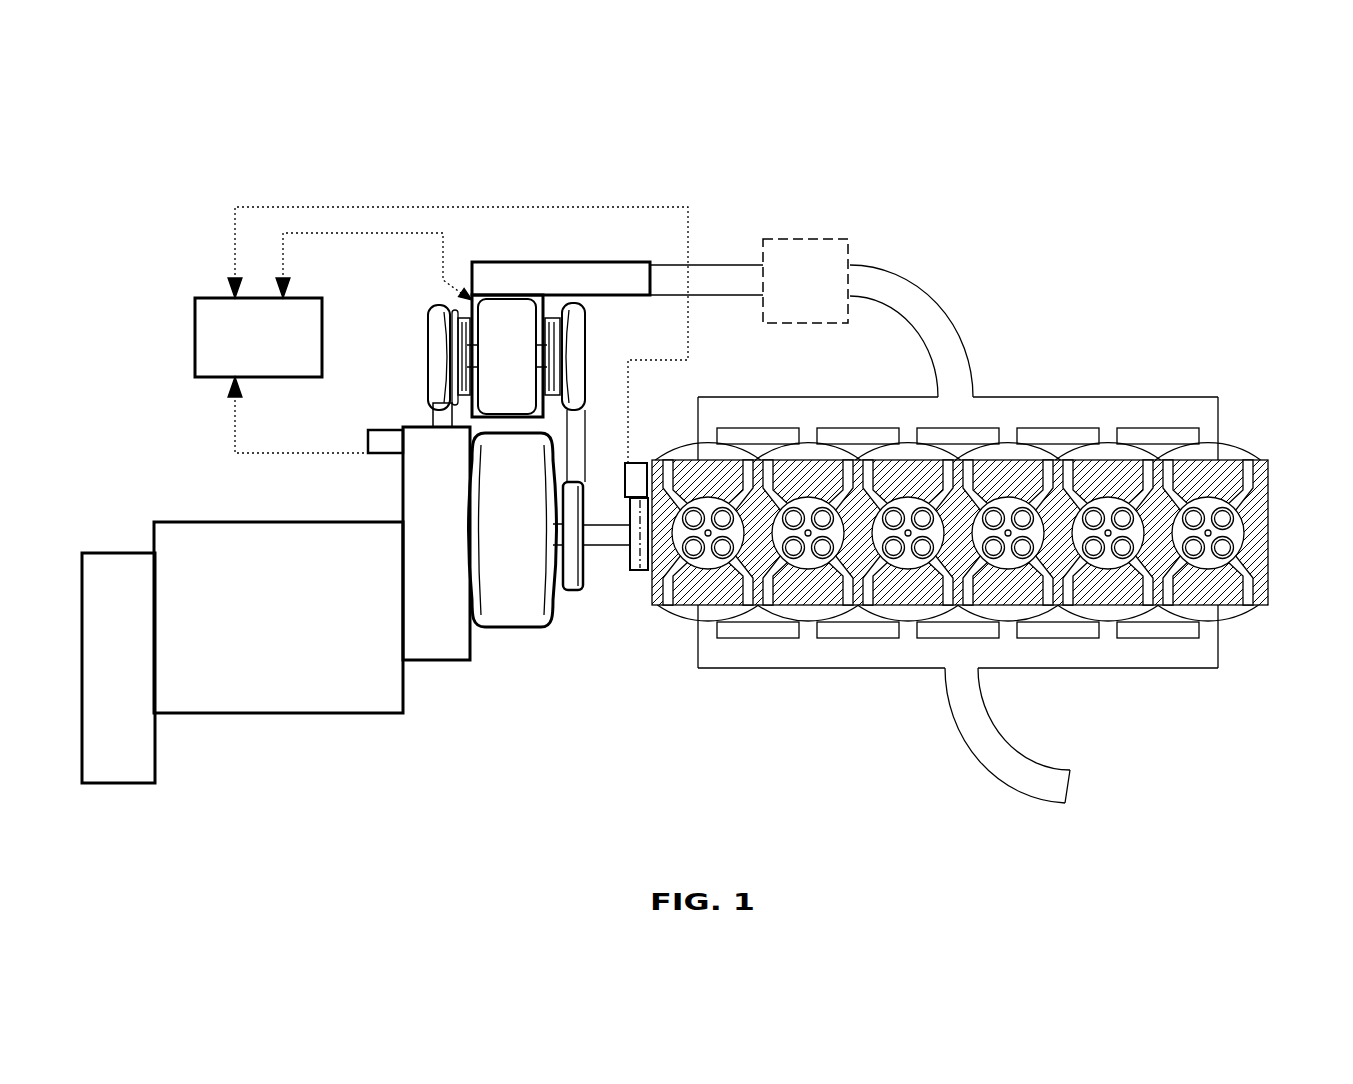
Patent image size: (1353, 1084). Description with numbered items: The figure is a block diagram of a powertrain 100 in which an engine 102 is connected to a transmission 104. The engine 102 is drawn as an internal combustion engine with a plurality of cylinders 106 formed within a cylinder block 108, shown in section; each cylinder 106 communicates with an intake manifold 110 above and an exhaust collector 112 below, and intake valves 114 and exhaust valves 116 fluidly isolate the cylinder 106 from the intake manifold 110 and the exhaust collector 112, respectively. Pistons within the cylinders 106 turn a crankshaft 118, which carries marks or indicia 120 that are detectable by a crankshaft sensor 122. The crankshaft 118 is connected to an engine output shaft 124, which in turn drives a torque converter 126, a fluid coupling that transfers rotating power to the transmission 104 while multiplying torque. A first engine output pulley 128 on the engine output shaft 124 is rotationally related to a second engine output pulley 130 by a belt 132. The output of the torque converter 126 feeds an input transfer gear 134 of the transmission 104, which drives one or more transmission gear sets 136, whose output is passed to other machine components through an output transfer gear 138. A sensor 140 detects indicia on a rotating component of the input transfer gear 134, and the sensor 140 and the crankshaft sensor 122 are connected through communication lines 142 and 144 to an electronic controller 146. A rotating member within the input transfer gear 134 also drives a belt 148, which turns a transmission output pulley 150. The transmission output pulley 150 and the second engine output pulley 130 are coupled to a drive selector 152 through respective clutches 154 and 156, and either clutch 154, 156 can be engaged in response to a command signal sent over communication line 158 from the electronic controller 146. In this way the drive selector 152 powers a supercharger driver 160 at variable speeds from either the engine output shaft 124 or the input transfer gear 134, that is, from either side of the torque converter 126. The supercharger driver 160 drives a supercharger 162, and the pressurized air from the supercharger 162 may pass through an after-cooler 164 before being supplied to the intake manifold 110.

The powertrain 100 is at (1138, 162).
The engine 102 is at (1207, 354).
The transmission 104 is at (277, 786).
The cylinders 106 is at (707, 560).
The cylinder block 108 is at (1261, 535).
The intake manifold 110 is at (1025, 404).
The exhaust collector 112 is at (1092, 660).
The intake valves 114 is at (725, 518).
The exhaust valves 116 is at (693, 548).
The crankshaft 118 is at (640, 565).
The marks or indicia 120 is at (624, 560).
The crankshaft sensor 122 is at (641, 458).
The engine output shaft 124 is at (597, 535).
The torque converter 126 is at (530, 548).
The first engine output pulley 128 is at (578, 590).
The second engine output pulley 130 is at (573, 310).
The belt 132 is at (577, 433).
The input transfer gear 134 is at (454, 549).
The transmission gear sets 136 is at (297, 629).
The output transfer gear 138 is at (139, 681).
The sensor 140 is at (387, 457).
The communication line 142 is at (688, 233).
The communication line 144 is at (233, 428).
The electronic controller 146 is at (275, 350).
The belt 148 is at (438, 420).
The transmission output pulley 150 is at (438, 320).
The drive selector 152 is at (470, 228).
The clutch 154 is at (462, 363).
The clutch 156 is at (547, 310).
The communication line 158 is at (408, 233).
The supercharger driver 160 is at (502, 305).
The supercharger 162 is at (618, 273).
The after-cooler 164 is at (833, 239).